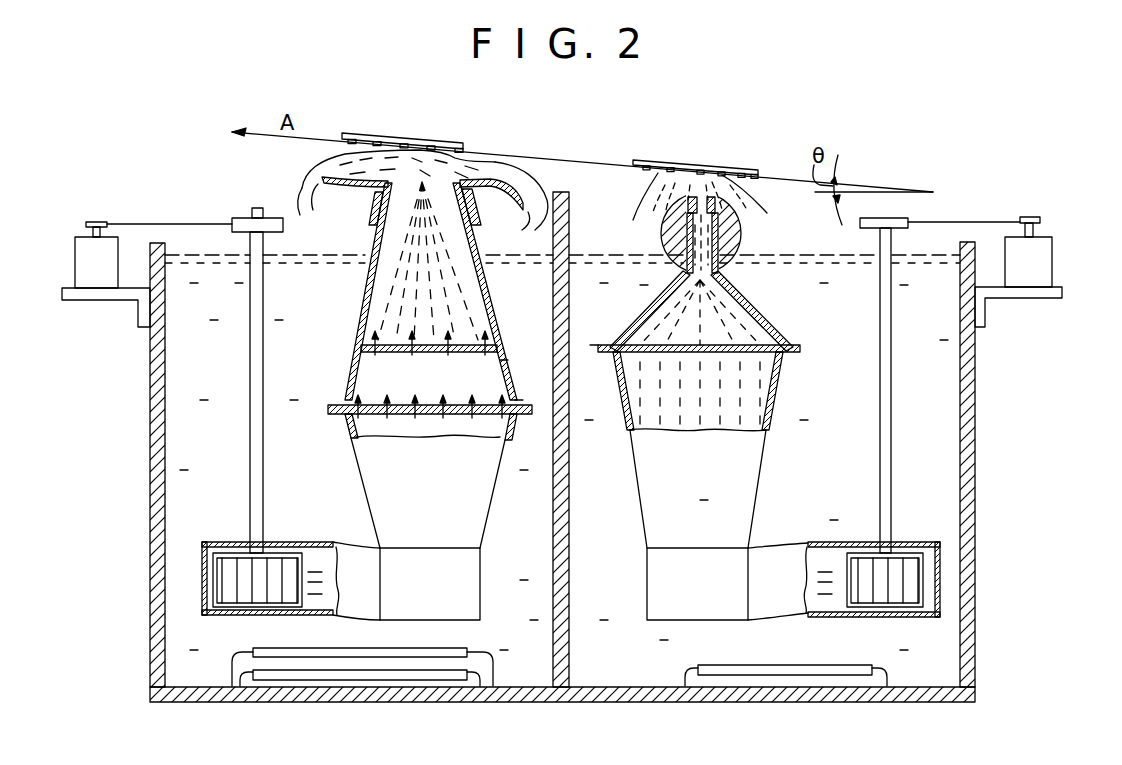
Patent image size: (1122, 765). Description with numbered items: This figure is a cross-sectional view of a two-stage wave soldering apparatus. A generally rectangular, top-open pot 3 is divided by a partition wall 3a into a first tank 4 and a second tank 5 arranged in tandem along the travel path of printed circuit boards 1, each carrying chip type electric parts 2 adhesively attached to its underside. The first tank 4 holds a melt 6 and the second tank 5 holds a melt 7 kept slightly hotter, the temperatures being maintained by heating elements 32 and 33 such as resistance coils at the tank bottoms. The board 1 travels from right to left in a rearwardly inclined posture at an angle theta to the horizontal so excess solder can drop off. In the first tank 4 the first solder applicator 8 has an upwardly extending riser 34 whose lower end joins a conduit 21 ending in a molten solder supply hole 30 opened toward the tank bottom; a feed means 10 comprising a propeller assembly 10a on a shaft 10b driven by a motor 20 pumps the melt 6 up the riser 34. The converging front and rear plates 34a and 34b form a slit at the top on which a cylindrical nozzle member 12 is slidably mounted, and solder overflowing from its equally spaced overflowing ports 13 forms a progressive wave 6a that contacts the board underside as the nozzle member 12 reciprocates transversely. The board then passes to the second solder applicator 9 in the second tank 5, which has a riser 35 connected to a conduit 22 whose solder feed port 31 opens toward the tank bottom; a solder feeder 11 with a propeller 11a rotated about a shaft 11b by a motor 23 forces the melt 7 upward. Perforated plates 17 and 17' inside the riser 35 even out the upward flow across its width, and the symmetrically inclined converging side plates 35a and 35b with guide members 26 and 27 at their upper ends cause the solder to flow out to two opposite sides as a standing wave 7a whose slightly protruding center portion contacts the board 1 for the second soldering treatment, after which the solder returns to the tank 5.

The printed circuit board 1 is at (386, 134).
The chip type electric parts 2 is at (344, 140).
The pot 3 is at (993, 506).
The partition wall 3a is at (569, 523).
The first tank 4 is at (950, 387).
The second tank 5 is at (163, 409).
The molten solder (first melt) 6 is at (933, 453).
The progressive wave 6a is at (703, 180).
The molten solder (second melt) 7 is at (183, 367).
The standing wave 7a is at (423, 163).
The first solder applicator means 8 is at (734, 333).
The second solder applicator means 9 is at (428, 322).
The feed means 10 is at (896, 437).
The propeller assembly 10a is at (912, 582).
The shaft 10b is at (878, 423).
The solder feeder 11 is at (247, 430).
The propeller 11a is at (230, 583).
The shaft 11b is at (250, 430).
The cylindrical nozzle member 12 is at (741, 233).
The overflowing ports 13 is at (707, 205).
The perforated plate 17 is at (429, 362).
The perforated plate 17' is at (430, 435).
The motor 20 is at (1035, 265).
The conduit 21 is at (783, 560).
The conduit 22 is at (355, 557).
The motor 23 is at (80, 263).
The guide member 26 is at (503, 177).
The guide member 27 is at (330, 163).
The molten solder supply hole 30 is at (893, 617).
The solder feed port 31 is at (247, 614).
The heating element 32 is at (787, 676).
The heating element 33 is at (312, 678).
The riser 34 is at (733, 409).
The front plate 34a is at (770, 320).
The rear plate 34b is at (652, 312).
The riser 35 is at (440, 365).
The converging side plate 35a is at (491, 297).
The converging side plate 35b is at (363, 300).